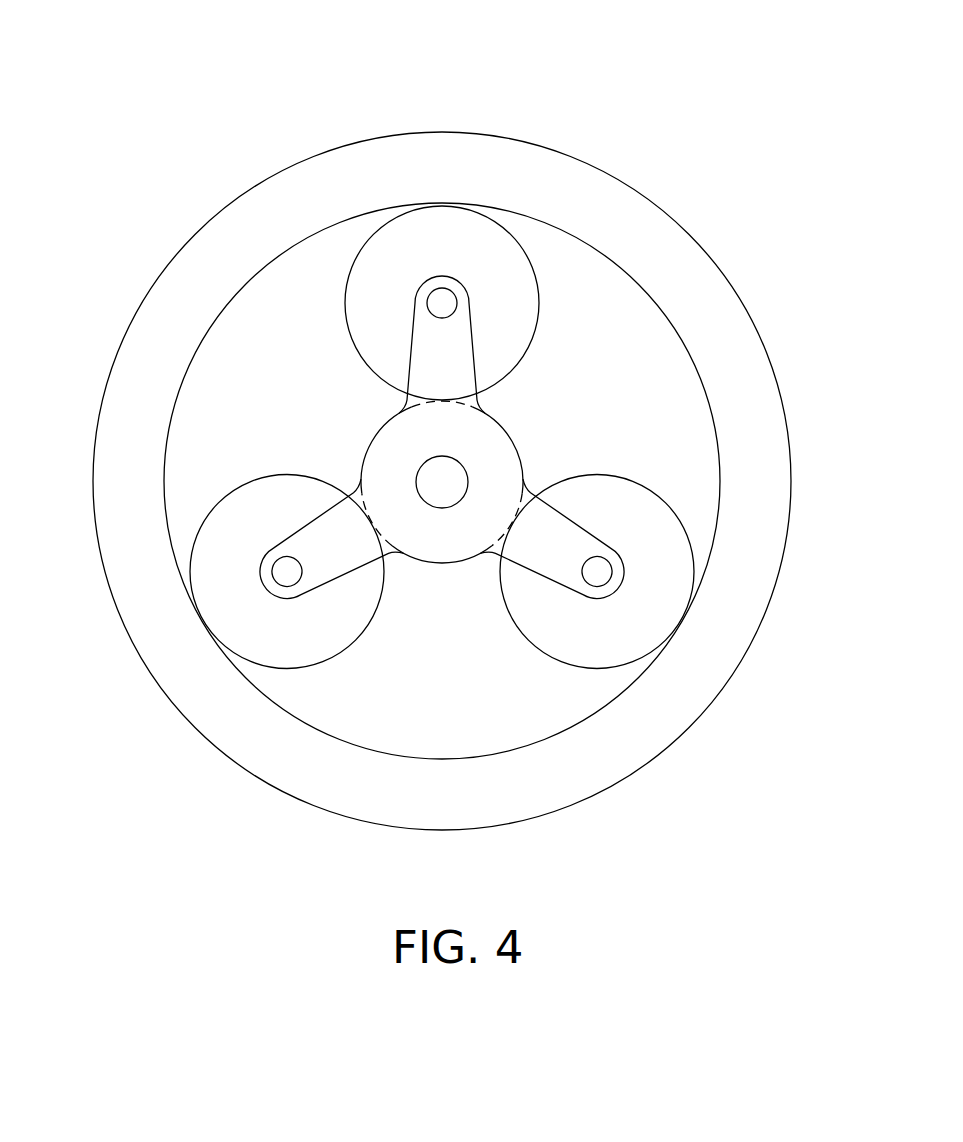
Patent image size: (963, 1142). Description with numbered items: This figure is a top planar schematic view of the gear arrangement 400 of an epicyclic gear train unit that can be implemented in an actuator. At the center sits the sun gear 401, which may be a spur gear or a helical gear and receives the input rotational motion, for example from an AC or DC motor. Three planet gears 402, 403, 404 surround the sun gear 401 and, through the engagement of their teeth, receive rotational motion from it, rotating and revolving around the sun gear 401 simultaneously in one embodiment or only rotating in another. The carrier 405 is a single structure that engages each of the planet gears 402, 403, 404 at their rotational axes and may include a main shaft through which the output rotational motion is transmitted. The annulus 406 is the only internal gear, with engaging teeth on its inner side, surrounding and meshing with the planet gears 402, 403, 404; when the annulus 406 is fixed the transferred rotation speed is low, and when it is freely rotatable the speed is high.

The planetary gear system 400 is at (93, 40).
The sun gear 401 is at (442, 563).
The planet gear 402 is at (213, 561).
The planet gear 403 is at (635, 632).
The planet gear 404 is at (500, 253).
The carrier 405 is at (430, 337).
The annulus 406 is at (763, 437).